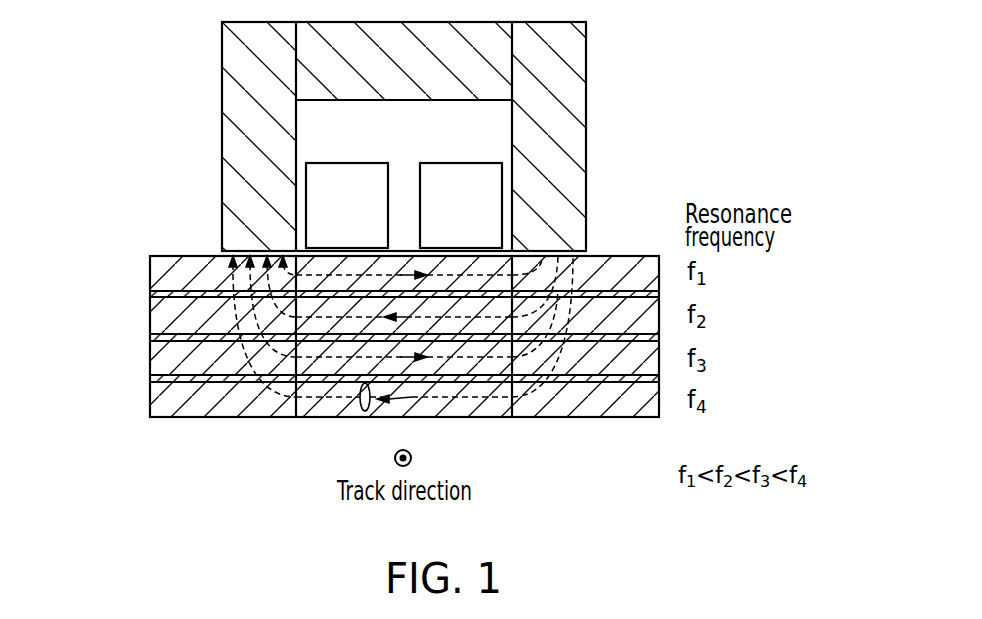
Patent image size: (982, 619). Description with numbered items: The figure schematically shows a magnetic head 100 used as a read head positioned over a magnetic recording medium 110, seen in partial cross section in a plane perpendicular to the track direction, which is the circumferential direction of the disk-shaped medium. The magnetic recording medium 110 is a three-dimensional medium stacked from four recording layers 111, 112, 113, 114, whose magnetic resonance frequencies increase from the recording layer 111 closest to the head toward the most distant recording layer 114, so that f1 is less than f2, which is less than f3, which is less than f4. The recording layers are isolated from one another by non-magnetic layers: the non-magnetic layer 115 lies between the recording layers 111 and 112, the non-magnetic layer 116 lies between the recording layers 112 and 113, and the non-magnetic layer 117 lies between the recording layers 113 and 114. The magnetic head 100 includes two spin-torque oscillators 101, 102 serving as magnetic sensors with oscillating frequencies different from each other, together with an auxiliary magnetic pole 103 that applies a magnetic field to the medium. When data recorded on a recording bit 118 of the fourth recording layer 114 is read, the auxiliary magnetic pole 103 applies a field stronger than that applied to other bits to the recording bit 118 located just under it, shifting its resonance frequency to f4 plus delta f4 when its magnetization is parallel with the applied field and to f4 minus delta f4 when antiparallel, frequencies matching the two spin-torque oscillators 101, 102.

The magnetic head 100 is at (166, 157).
The spin-torque oscillator 101 is at (373, 162).
The spin-torque oscillator 102 is at (433, 162).
The auxiliary magnetic pole 103 is at (584, 37).
The magnetic recording medium 110 is at (177, 253).
The recording layer 111 is at (152, 271).
The recording layer 112 is at (152, 313).
The recording layer 113 is at (152, 356).
The recording layer 114 is at (152, 398).
The non-magnetic layer 115 is at (152, 295).
The non-magnetic layer 116 is at (152, 338).
The non-magnetic layer 117 is at (152, 379).
The recording bit 118 is at (487, 419).